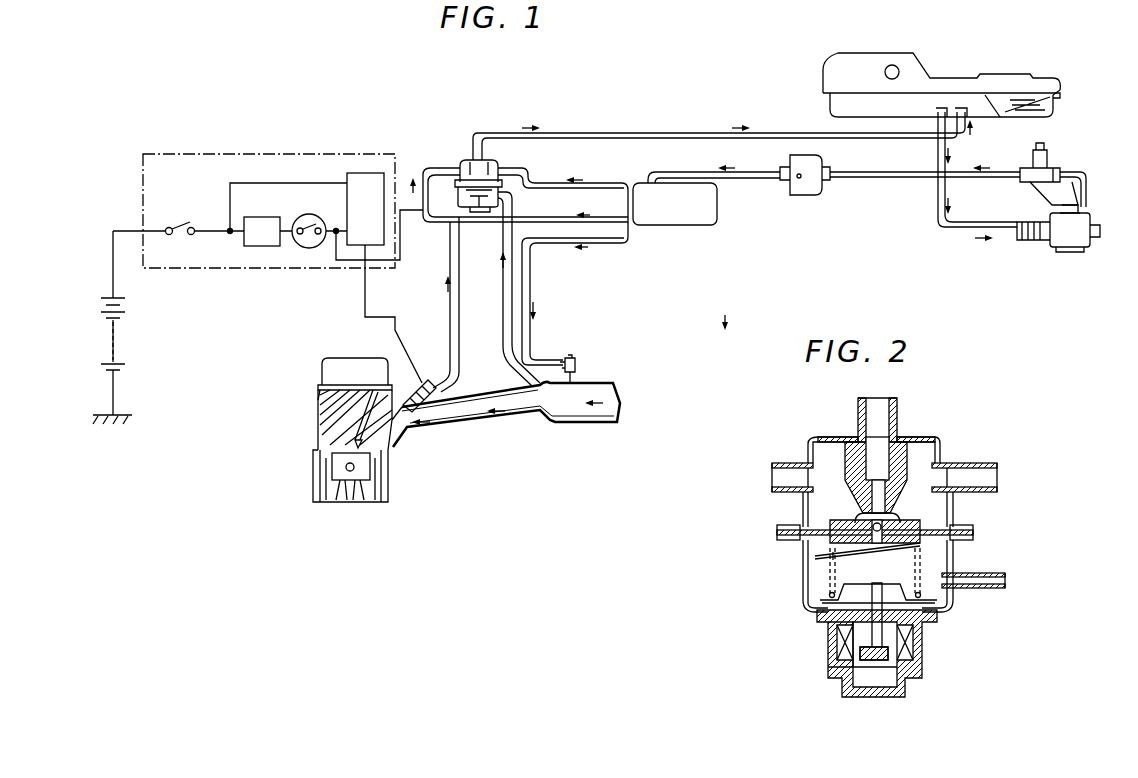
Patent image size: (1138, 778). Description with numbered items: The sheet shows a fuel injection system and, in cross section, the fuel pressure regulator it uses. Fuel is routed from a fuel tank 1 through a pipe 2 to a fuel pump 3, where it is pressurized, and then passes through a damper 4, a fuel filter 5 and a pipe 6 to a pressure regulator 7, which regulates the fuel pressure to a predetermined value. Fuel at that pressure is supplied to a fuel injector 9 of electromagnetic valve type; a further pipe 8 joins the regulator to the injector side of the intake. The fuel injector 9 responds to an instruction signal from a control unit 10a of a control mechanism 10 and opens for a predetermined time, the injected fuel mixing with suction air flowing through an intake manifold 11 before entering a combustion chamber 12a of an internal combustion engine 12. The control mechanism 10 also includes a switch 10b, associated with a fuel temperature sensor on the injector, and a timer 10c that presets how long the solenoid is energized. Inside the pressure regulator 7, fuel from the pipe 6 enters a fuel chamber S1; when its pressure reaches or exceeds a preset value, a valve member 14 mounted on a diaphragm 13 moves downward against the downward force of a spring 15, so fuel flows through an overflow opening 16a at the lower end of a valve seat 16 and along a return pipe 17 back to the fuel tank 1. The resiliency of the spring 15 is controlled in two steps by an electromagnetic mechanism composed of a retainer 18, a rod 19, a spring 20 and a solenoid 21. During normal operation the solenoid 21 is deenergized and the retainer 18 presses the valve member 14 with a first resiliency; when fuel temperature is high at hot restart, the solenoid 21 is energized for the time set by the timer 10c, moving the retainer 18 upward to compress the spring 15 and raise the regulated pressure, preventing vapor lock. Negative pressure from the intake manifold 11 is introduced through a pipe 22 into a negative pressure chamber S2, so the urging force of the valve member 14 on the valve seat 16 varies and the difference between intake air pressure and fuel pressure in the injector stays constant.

In FIG. 1, the fuel tank 1 is at (925, 78).
In FIG. 1, the pipe 2 is at (953, 235).
In FIG. 1, the fuel pump 3 is at (1090, 247).
In FIG. 1, the damper 4 is at (1044, 150).
In FIG. 1, the fuel filter 5 is at (806, 195).
In FIG. 1, the pipe 6 is at (610, 183).
In FIG. 2, the pipe 6 is at (778, 478).
In FIG. 1, the pressure regulator 7 is at (465, 160).
In FIG. 2, the pressure regulator 7 is at (945, 425).
In FIG. 1, the pipe to intake manifold 8 is at (450, 312).
In FIG. 1, the fuel injector 9 is at (434, 391).
In FIG. 1, the control mechanism 10 is at (222, 154).
In FIG. 1, the control unit 10a is at (365, 173).
In FIG. 1, the switch 10b is at (312, 248).
In FIG. 1, the timer 10c is at (262, 246).
In FIG. 1, the intake manifold 11 is at (468, 426).
In FIG. 1, the internal combustion engine 12 is at (300, 426).
In FIG. 1, the combustion chamber 12a is at (313, 456).
In FIG. 2, the diaphragm 13 is at (933, 532).
In FIG. 2, the valve member 14 is at (830, 524).
In FIG. 2, the spring 15 is at (920, 565).
In FIG. 2, the valve seat 16 is at (850, 495).
In FIG. 2, the overflow opening 16a is at (893, 510).
In FIG. 1, the return pipe 17 is at (620, 133).
In FIG. 2, the return pipe 17 is at (897, 414).
In FIG. 2, the retainer 18 is at (922, 625).
In FIG. 2, the rod 19 is at (822, 630).
In FIG. 2, the spring 20 is at (855, 640).
In FIG. 2, the solenoid 21 is at (913, 646).
In FIG. 1, the pipe 22 is at (507, 312).
In FIG. 2, the pipe 22 is at (990, 589).
In FIG. 2, the fuel chamber S1 is at (815, 502).
In FIG. 2, the negative pressure chamber S2 is at (815, 570).